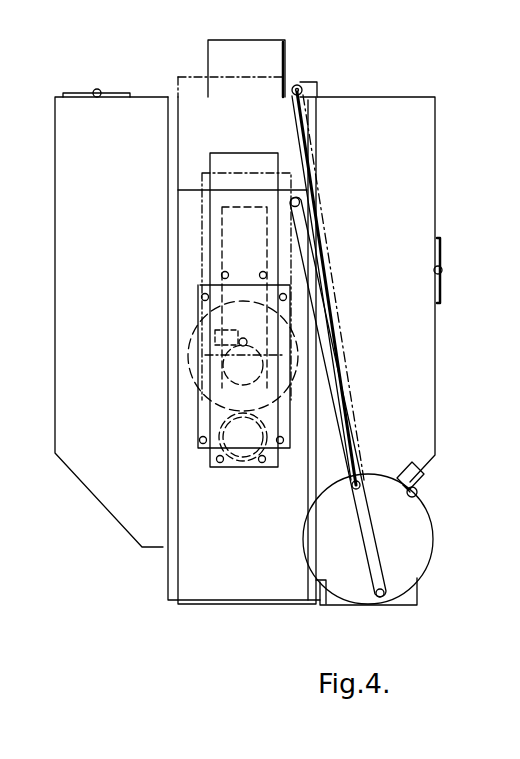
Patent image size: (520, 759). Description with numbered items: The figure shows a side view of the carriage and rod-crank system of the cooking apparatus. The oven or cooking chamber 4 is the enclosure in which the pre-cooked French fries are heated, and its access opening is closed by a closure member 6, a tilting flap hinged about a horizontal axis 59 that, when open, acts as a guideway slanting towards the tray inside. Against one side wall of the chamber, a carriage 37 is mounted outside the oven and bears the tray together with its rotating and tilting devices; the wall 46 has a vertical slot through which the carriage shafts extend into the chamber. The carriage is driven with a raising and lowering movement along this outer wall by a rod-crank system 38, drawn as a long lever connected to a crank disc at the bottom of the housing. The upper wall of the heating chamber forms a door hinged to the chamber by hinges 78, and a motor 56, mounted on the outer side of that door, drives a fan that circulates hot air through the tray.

The oven or cooking chamber 4 is at (392, 361).
The closure member 6 is at (438, 178).
The carriage 37 is at (205, 73).
The rod-crank system 38 is at (360, 445).
The wall 46 is at (337, 110).
The motor 56 is at (258, 70).
The horizontal axis 59 is at (441, 270).
The hinges 78 is at (88, 91).